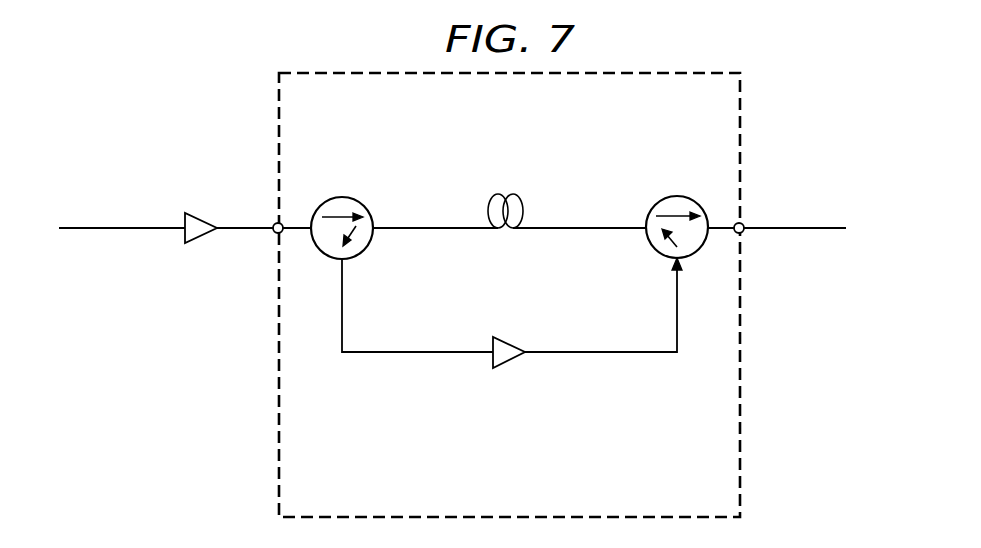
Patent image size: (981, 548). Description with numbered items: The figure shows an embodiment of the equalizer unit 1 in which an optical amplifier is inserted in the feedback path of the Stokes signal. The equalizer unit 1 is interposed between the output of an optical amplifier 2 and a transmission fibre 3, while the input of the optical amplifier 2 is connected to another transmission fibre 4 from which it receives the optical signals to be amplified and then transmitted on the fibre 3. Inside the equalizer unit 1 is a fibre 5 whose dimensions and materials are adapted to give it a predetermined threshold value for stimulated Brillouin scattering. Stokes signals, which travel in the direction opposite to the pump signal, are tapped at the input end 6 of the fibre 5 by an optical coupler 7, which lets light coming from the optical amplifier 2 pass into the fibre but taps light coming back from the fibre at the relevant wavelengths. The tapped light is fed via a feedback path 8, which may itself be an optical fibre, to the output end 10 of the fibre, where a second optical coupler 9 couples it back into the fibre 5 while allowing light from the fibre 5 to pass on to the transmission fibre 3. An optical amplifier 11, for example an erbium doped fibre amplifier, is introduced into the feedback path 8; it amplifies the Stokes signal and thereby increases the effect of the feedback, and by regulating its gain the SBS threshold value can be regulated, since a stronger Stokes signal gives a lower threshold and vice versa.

The equalizer unit 1 is at (279, 453).
The optical amplifier 2 is at (205, 213).
The transmission fibre 3 is at (808, 229).
The transmission fibre 4 is at (101, 230).
The fibre 5 is at (510, 194).
The input end 6 is at (388, 230).
The optical coupler 7 is at (342, 197).
The feedback path 8 is at (388, 355).
The second optical coupler 9 is at (677, 196).
The output end 10 is at (628, 230).
The optical amplifier 11 is at (510, 363).